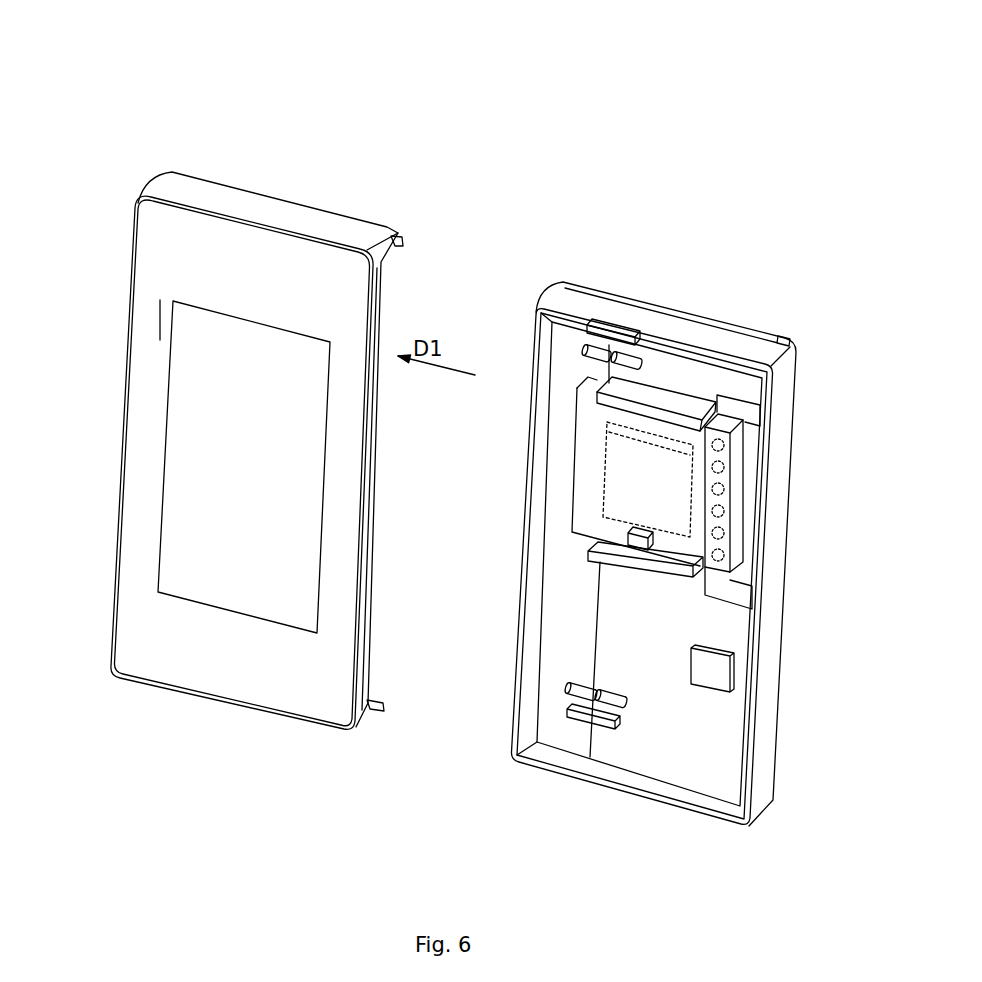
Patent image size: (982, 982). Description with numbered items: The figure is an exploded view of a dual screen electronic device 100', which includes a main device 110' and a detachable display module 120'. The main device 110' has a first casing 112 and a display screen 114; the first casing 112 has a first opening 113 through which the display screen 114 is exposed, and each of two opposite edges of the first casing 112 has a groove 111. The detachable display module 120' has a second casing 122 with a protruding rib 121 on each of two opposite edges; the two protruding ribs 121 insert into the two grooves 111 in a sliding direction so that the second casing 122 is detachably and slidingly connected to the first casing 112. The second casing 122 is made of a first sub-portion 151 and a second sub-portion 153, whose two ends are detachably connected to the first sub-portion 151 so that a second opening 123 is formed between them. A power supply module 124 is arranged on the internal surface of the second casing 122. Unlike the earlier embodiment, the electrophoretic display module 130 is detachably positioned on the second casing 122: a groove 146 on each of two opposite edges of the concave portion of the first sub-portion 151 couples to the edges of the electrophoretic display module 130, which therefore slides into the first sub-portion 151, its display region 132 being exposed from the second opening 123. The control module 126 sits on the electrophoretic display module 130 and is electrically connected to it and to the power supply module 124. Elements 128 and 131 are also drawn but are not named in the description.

The dual screen electronic device 100' is at (452, 459).
The main device 110' is at (270, 428).
The groove 111 is at (405, 241).
The first casing 112 is at (188, 240).
The first opening 113 is at (155, 322).
The display screen 114 is at (195, 390).
The detachable display module 120' is at (651, 556).
The protruding rib 121 is at (660, 303).
The second casing 122 is at (780, 382).
The second opening 123 is at (590, 495).
The power supply module 124 is at (720, 672).
The control module 126 is at (640, 533).
The heat dissipation plate 128 is at (725, 481).
The electrophoretic display module 130 is at (673, 417).
The holes 131 is at (727, 562).
The display region 132 is at (615, 438).
The groove 146 is at (721, 416).
The first sub-portion 151 is at (610, 737).
The second sub-portion 153 is at (543, 737).